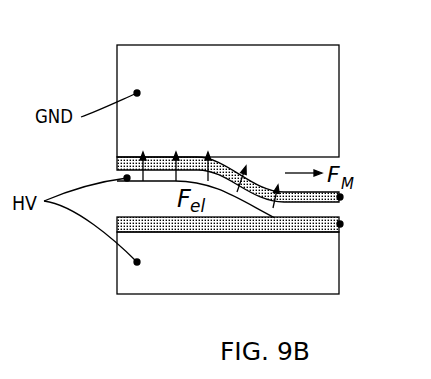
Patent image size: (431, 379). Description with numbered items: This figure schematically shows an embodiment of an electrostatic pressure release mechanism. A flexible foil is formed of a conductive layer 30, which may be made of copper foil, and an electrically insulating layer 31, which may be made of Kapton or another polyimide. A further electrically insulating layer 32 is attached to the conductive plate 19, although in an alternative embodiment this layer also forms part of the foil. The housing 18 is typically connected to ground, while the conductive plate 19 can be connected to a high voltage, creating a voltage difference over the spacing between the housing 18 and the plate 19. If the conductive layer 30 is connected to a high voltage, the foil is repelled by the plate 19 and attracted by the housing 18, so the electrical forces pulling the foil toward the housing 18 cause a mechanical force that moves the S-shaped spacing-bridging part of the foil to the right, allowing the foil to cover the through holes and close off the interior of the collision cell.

The housing 18 is at (339, 73).
The conductive plate 19 is at (339, 265).
The conductive layer 30 is at (155, 176).
The electrically insulating layer 31 is at (340, 197).
The further electrically insulating layer 32 is at (340, 224).